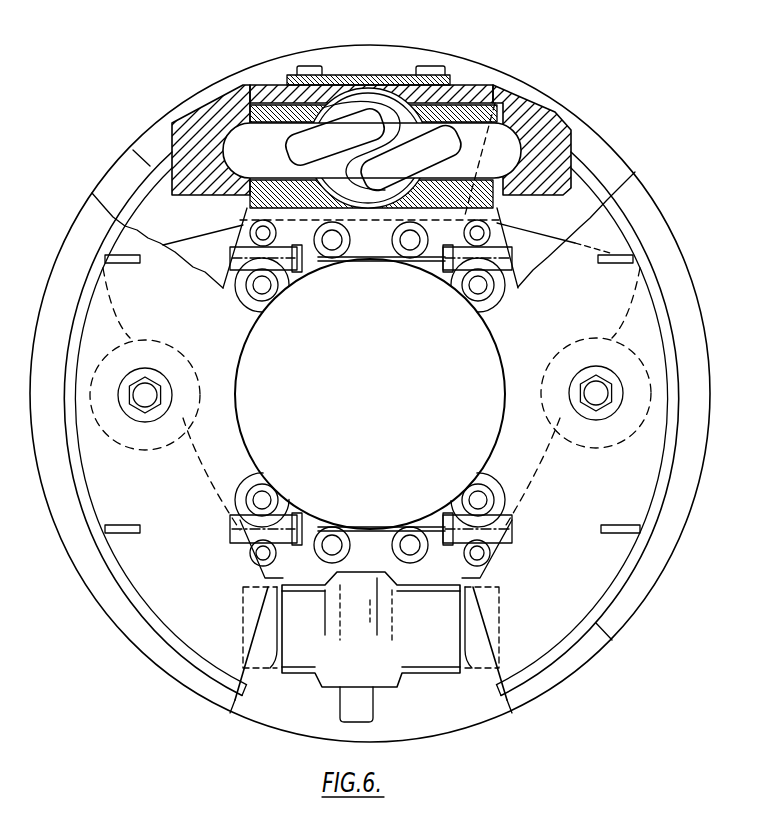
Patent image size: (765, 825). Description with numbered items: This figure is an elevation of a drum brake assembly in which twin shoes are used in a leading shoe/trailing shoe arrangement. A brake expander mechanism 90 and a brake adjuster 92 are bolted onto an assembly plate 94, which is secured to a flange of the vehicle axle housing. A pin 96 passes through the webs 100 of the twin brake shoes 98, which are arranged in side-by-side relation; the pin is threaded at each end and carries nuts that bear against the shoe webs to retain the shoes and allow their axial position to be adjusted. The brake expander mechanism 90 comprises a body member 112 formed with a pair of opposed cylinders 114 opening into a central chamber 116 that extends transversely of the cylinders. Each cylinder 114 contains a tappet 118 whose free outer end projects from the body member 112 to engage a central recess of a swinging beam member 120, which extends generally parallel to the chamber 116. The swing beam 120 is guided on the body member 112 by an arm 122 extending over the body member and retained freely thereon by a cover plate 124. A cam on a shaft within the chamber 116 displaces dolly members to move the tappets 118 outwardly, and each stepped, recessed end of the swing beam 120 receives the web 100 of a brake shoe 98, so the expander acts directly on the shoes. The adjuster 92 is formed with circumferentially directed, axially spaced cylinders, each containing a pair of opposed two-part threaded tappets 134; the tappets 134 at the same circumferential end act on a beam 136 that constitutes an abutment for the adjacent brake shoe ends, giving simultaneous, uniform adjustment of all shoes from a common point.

The brake expander mechanism 90 is at (178, 118).
The brake adjuster 92 is at (306, 677).
The assembly plate 94 is at (126, 338).
The pin 96 is at (148, 402).
The brake shoe 98 is at (152, 607).
The web 100 is at (203, 568).
The body member 112 is at (252, 202).
The cylinder 114 is at (310, 265).
The central chamber 116 is at (393, 207).
The tappet 118 is at (254, 165).
The swinging beam member 120 is at (543, 190).
The arm 122 is at (488, 88).
The cover plate 124 is at (368, 75).
The tappet 134 is at (272, 650).
The beam 136 is at (250, 700).